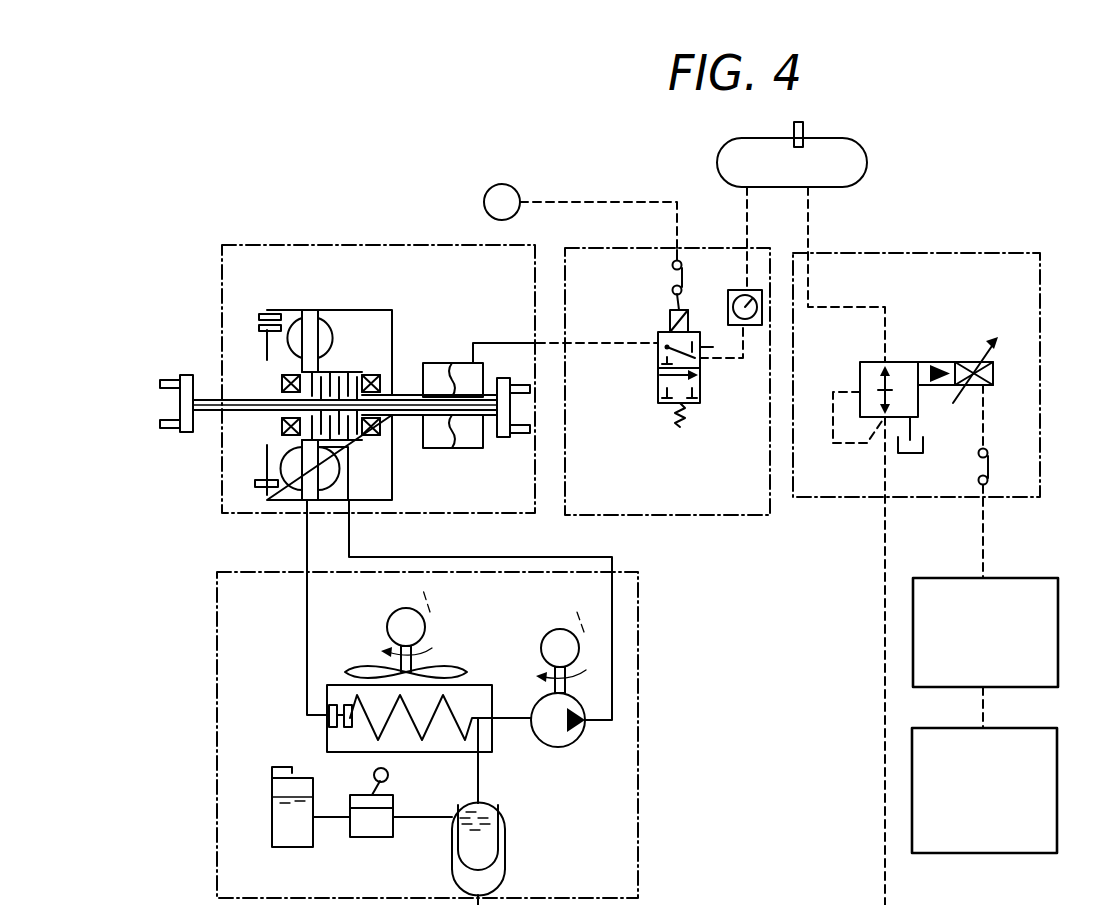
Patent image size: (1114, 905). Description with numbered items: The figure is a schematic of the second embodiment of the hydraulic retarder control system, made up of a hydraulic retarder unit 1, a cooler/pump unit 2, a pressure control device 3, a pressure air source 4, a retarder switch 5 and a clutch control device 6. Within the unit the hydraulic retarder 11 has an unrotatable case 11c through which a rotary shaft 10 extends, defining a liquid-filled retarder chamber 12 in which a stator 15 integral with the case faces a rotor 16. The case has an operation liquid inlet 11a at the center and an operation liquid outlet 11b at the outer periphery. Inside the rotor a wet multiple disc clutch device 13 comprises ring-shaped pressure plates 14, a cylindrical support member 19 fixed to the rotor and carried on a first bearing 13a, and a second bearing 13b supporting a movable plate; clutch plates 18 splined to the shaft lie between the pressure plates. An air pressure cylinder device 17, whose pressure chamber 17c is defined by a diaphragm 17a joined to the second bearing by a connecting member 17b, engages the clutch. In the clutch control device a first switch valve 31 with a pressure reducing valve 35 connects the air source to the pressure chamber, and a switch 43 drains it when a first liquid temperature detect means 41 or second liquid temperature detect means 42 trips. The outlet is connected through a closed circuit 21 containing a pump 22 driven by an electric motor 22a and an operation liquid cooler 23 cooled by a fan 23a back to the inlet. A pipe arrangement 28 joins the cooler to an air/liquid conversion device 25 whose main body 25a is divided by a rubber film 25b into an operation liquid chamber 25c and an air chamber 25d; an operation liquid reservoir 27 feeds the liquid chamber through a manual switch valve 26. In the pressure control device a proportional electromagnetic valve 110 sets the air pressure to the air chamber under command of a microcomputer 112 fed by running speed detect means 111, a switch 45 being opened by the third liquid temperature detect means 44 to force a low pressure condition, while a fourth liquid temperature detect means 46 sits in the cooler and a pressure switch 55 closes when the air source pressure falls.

The hydraulic retarder unit 1 is at (288, 245).
The cooler/pump unit 2 is at (217, 622).
The pressure control device 3 is at (1040, 325).
The pressure air source 4 is at (867, 162).
The retarder switch 5 is at (487, 193).
The clutch control device 6 is at (700, 515).
The rotary shaft 10 is at (247, 398).
The hydraulic retarder 11 is at (266, 338).
The operation liquid inlet 11a is at (321, 449).
The operation liquid outlet 11b is at (305, 502).
The case 11c is at (299, 310).
The retarder chamber 12 is at (283, 452).
The clutch device 13 is at (366, 458).
The first bearing 13a is at (280, 430).
The second bearing 13b is at (392, 430).
The pressure plates 14 is at (277, 413).
The stator 15 is at (338, 372).
The rotor 16 is at (295, 374).
The air pressure cylinder device 17 is at (427, 363).
The diaphragm 17a is at (465, 363).
The connecting member 17b is at (408, 418).
The pressure chamber 17c is at (470, 434).
The clutch plates 18 is at (256, 345).
The cylindrical support member 19 is at (350, 384).
The closed circuit 21 is at (638, 606).
The pump 22 is at (582, 738).
The electric motor 22a is at (541, 648).
The operation liquid cooler 23 is at (327, 745).
The fan 23a is at (378, 664).
The air/liquid conversion device 25 is at (512, 838).
The main body 25a is at (505, 884).
The rubber film 25b is at (455, 862).
The operation liquid chamber 25c is at (492, 830).
The air chamber 25d is at (498, 870).
The manual switch valve 26 is at (360, 837).
The operation liquid reservoir 27 is at (272, 838).
The pipe arrangement 28 is at (478, 788).
The first switch valve 31 is at (658, 390).
The pressure reducing valve 35 is at (735, 290).
The first liquid temperature detect means 41 is at (258, 316).
The second liquid temperature detect means 42 is at (328, 713).
The switch 43 is at (671, 285).
The third liquid temperature detect means 44 is at (258, 327).
The switch 45 is at (988, 470).
The fourth liquid temperature detect means 46 is at (344, 705).
The pressure switch 55 is at (257, 484).
The proportional electromagnetic valve 110 is at (920, 405).
The running speed detect means 111 is at (1057, 755).
The microcomputer 112 is at (1058, 600).